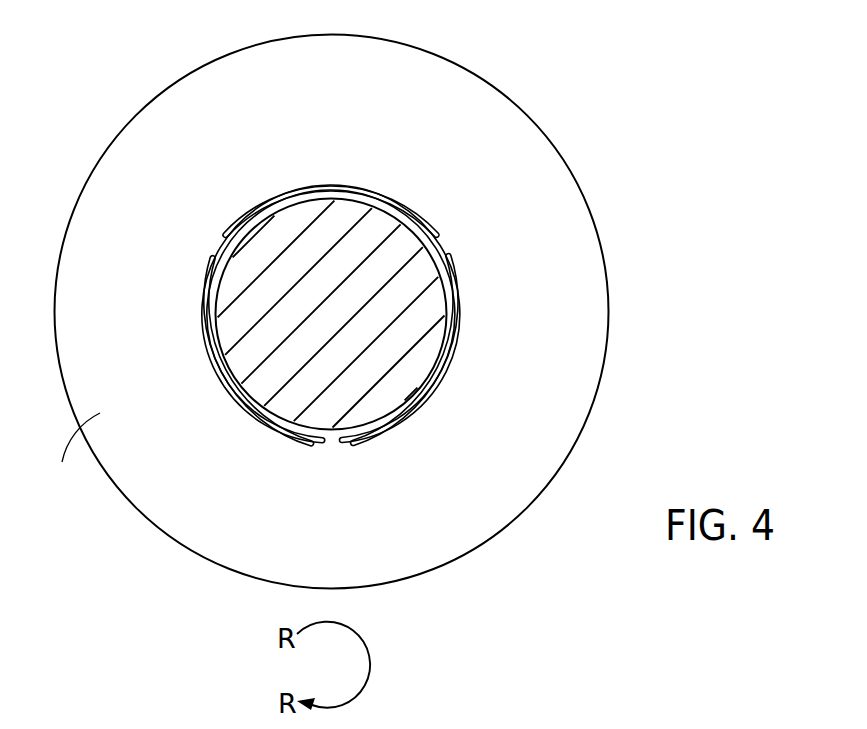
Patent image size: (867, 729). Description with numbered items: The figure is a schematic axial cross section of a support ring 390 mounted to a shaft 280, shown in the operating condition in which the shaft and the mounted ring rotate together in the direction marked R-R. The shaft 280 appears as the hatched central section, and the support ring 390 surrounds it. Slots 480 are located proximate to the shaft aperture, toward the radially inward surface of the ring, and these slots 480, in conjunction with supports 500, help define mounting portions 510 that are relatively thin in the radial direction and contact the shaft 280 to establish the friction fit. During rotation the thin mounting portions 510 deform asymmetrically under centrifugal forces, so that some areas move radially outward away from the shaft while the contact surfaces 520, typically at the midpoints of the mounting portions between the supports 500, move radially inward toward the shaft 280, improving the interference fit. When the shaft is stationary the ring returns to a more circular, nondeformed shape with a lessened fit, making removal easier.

The shaft 280 is at (398, 306).
The support ring 390 is at (558, 200).
The slot 480 is at (437, 395).
The support 500 is at (328, 447).
The mounting portion 510 is at (71, 458).
The contact surface 520 is at (328, 191).